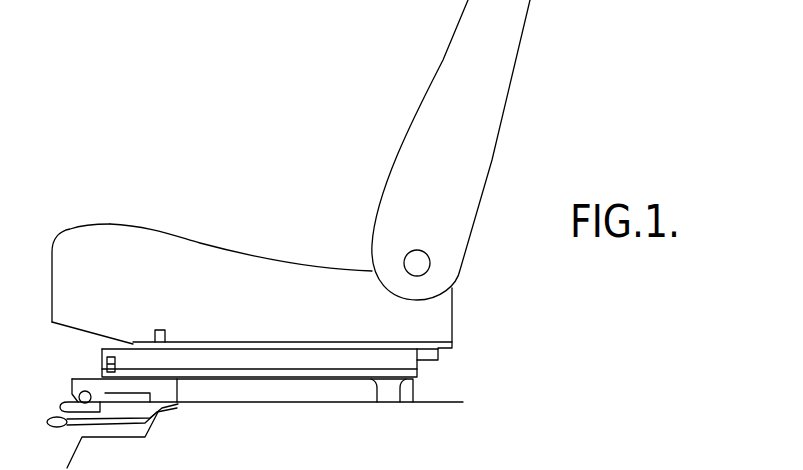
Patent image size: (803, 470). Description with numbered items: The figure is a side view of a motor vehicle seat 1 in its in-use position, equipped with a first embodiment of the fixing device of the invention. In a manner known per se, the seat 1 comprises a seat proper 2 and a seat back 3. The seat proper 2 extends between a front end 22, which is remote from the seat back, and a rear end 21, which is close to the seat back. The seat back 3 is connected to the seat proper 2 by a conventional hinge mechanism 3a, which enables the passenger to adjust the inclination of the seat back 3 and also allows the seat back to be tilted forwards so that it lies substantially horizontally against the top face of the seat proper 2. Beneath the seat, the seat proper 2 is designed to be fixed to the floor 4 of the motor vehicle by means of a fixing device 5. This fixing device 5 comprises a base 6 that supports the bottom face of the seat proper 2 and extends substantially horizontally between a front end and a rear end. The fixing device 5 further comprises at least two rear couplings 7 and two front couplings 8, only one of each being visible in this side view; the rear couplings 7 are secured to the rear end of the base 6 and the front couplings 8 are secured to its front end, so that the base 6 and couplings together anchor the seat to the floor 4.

The motor vehicle seat 1 is at (195, 128).
The seat proper 2 is at (208, 227).
The front end 22 is at (105, 248).
The seat back 3 is at (387, 129).
The hinge mechanism 3a is at (418, 265).
The rear end 21 is at (437, 317).
The fixing device 5 is at (82, 343).
The base 6 is at (456, 358).
The rear coupling 7 is at (419, 388).
The floor 4 is at (275, 406).
The front coupling 8 is at (52, 389).